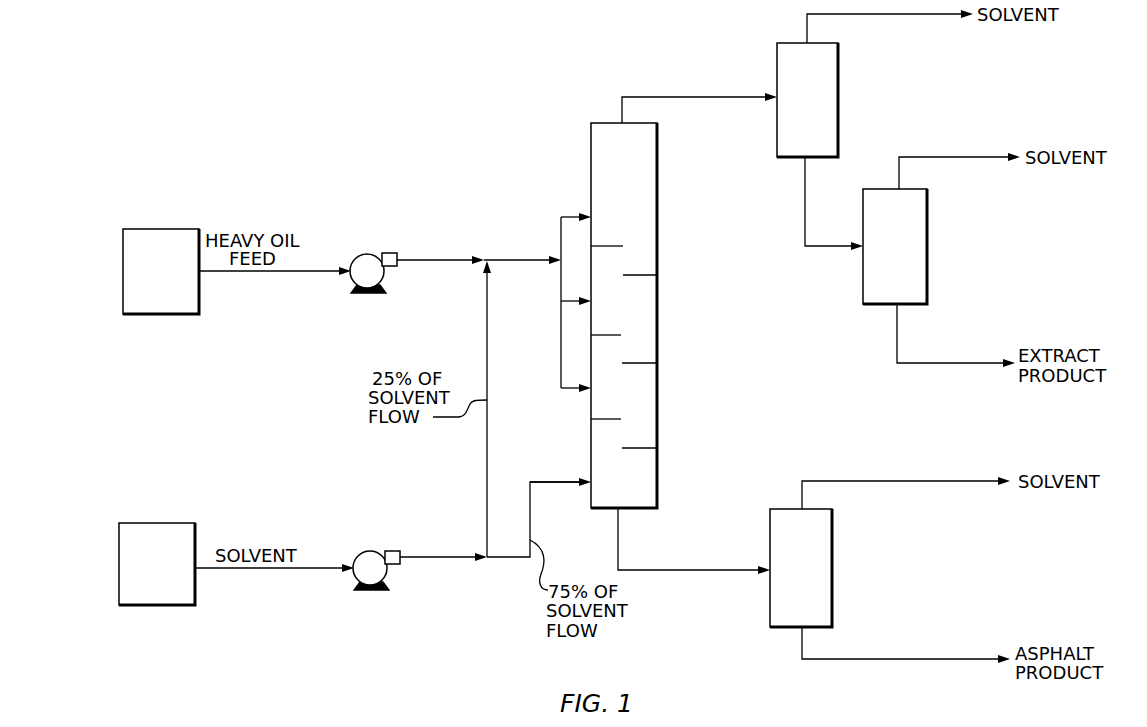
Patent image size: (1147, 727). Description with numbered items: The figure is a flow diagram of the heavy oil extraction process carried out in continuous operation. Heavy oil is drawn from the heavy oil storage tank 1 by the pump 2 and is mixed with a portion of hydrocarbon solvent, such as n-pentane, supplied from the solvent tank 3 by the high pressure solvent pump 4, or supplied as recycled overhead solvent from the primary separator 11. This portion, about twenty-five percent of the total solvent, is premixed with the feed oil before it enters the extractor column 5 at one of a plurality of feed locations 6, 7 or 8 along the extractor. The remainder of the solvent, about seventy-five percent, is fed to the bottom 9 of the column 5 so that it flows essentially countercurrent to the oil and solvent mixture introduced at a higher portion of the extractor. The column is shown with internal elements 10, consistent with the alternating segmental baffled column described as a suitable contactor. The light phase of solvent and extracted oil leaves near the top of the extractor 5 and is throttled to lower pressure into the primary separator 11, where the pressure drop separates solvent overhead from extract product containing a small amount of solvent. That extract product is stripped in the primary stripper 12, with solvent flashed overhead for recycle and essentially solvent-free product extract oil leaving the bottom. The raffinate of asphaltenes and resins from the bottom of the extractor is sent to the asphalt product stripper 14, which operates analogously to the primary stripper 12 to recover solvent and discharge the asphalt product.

The heavy oil storage tank 1 is at (166, 229).
The pump 2 is at (366, 254).
The solvent tank 3 is at (144, 523).
The high pressure solvent pump 4 is at (376, 551).
The extractor column 5 is at (657, 225).
The feed location 6 is at (588, 216).
The feed location 7 is at (589, 300).
The feed location 8 is at (589, 388).
The bottom of the column 9 is at (589, 481).
The baffles 10 is at (616, 246).
The primary separator 11 is at (777, 69).
The primary stripper 12 is at (863, 274).
The asphalt product stripper 14 is at (770, 534).